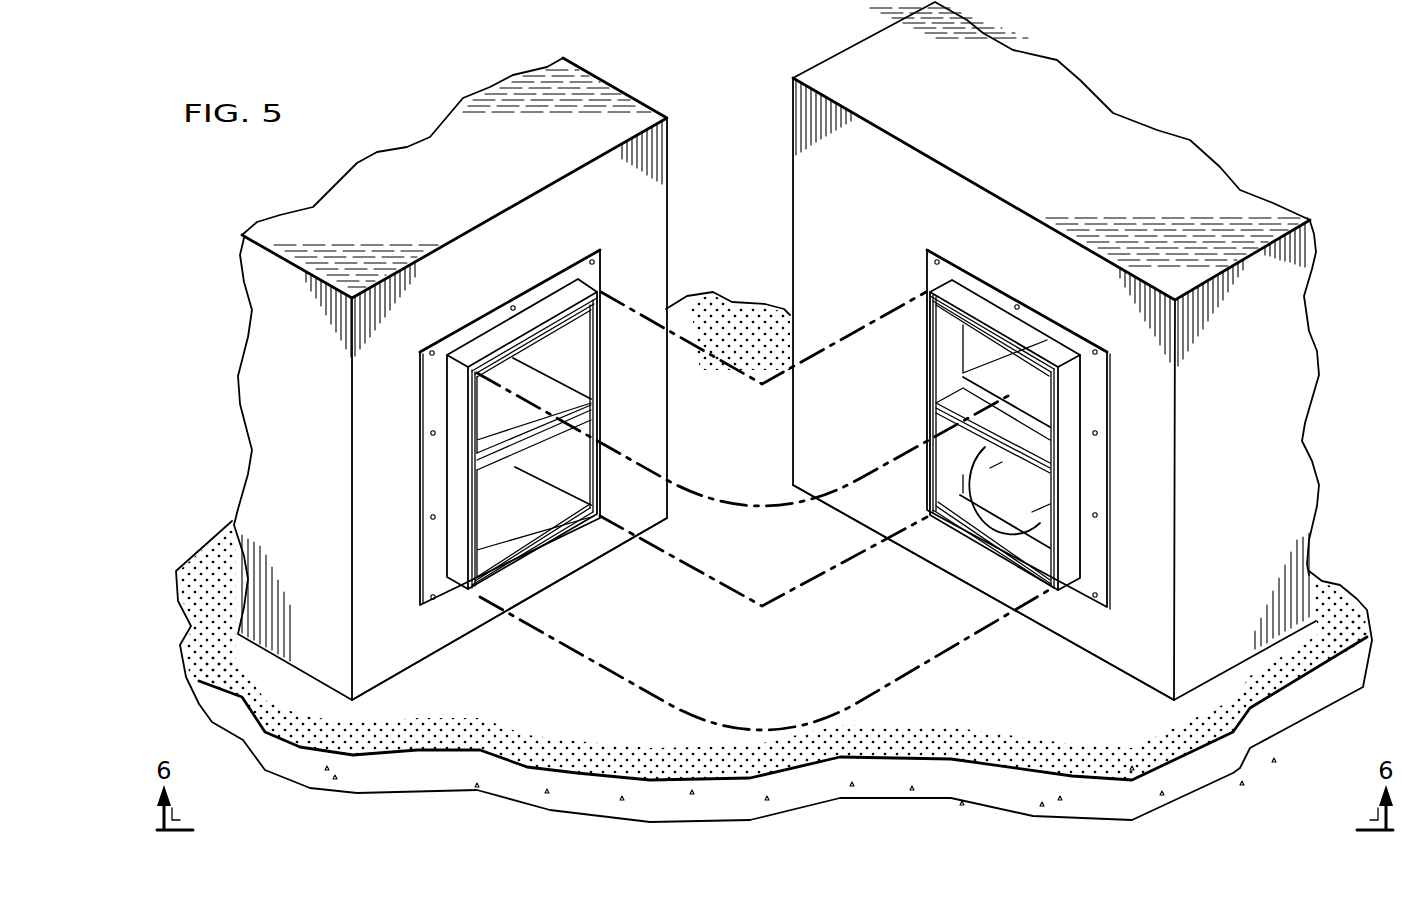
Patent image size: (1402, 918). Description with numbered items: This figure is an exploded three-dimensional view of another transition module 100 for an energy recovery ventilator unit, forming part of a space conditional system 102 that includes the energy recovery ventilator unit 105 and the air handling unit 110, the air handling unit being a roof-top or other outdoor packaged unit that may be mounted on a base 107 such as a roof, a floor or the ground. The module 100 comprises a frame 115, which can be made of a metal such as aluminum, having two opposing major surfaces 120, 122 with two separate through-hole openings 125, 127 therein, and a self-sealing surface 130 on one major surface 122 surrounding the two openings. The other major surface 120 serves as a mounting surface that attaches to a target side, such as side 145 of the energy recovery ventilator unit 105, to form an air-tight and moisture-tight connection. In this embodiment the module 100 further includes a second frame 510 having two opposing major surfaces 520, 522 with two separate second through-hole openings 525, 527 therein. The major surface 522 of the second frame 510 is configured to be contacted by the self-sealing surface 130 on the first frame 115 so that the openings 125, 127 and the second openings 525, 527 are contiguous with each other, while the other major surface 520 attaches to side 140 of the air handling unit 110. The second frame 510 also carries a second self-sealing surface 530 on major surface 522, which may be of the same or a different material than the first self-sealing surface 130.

The transition module 100 is at (478, 296).
The space conditional system 102 is at (1233, 84).
The energy recovery ventilator unit 105 is at (413, 137).
The base 107 is at (203, 560).
The air handling unit 110 is at (1102, 82).
The frame 115 is at (452, 395).
The major surface 120 is at (413, 495).
The major surface 122 is at (520, 565).
The through-hole opening 125 is at (557, 360).
The through-hole opening 127 is at (524, 508).
The self-sealing surface 130 is at (543, 333).
The side 140 is at (1140, 608).
The side 145 is at (392, 600).
The second frame 510 is at (1072, 400).
The major surface 520 is at (1093, 484).
The major surface 522 is at (955, 302).
The second through-hole opening 525 is at (978, 349).
The second through-hole opening 527 is at (1021, 499).
The second self-sealing surface 530 is at (923, 415).